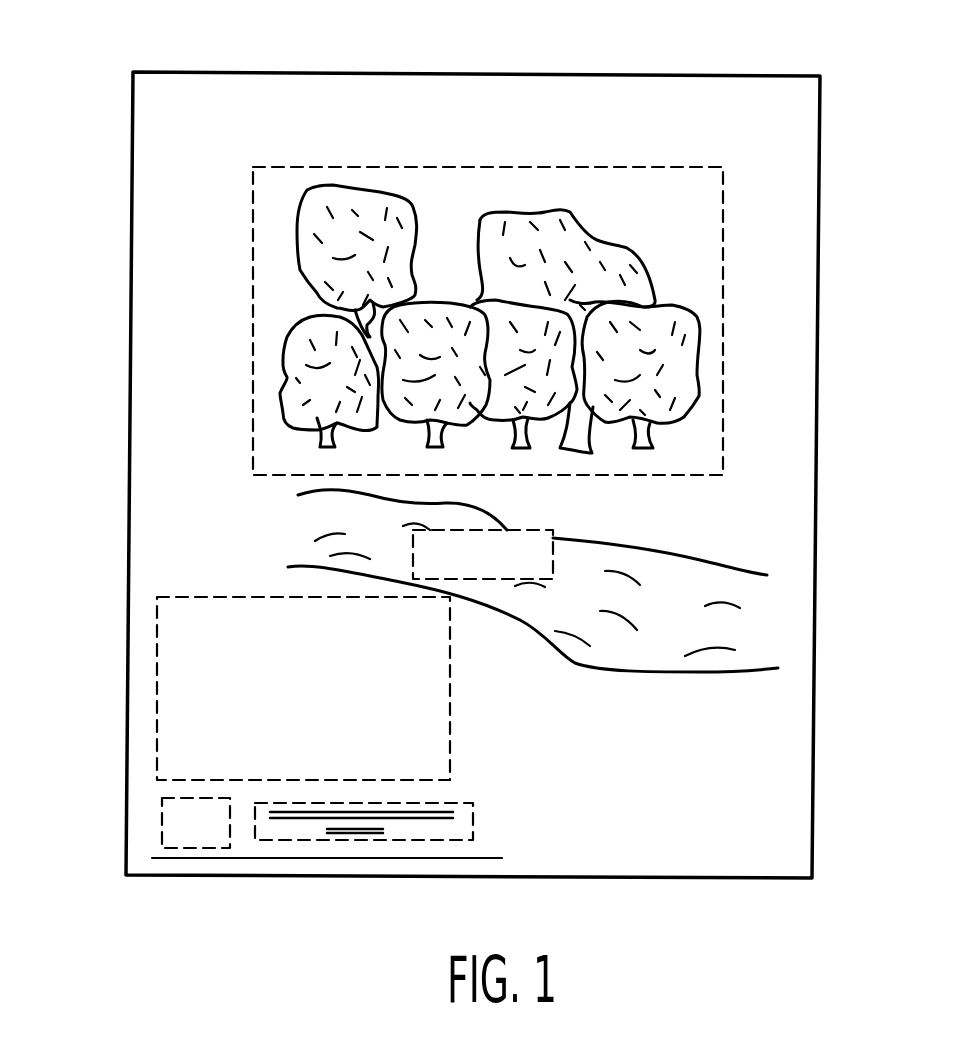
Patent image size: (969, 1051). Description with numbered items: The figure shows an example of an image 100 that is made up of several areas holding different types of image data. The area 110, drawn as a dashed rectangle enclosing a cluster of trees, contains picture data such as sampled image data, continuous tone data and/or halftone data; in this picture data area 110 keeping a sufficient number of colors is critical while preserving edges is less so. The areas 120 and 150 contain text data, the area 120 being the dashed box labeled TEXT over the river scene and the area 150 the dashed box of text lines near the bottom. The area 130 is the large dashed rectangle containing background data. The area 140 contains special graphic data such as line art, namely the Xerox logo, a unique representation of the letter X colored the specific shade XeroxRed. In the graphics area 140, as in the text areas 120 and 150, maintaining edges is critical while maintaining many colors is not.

The image 100 is at (262, 90).
The picture data area 110 is at (724, 203).
The text data area 120 is at (553, 555).
The background data area 130 is at (157, 690).
The special graphic data area 140 is at (162, 831).
The text data area 150 is at (473, 823).